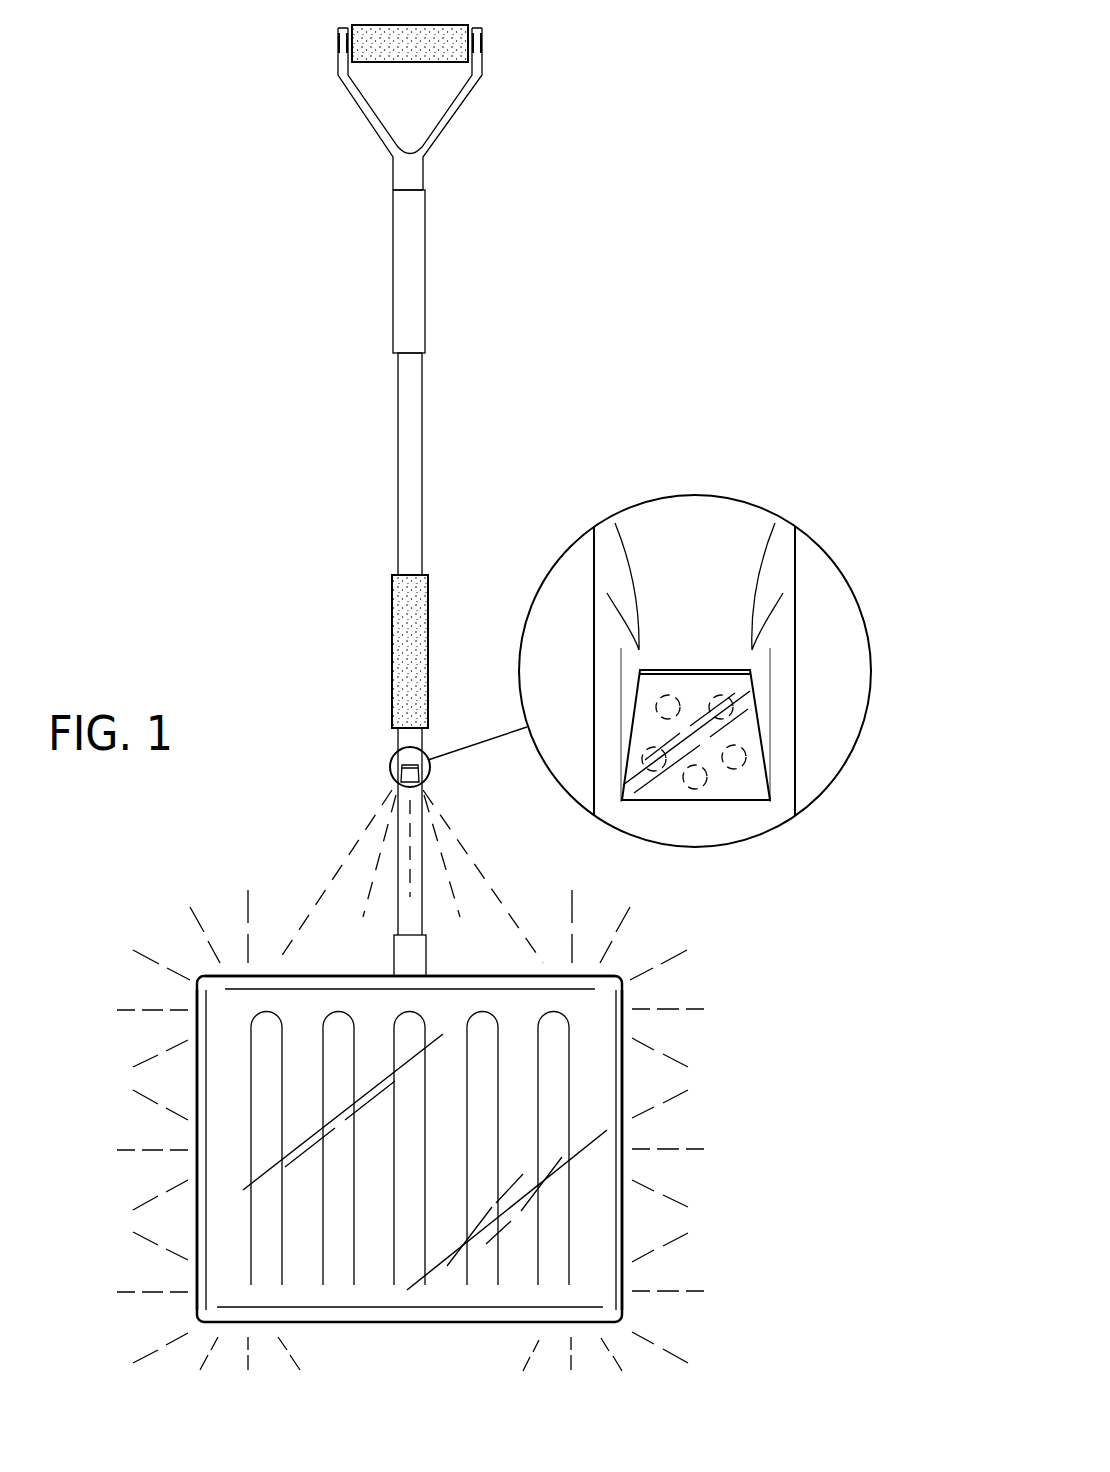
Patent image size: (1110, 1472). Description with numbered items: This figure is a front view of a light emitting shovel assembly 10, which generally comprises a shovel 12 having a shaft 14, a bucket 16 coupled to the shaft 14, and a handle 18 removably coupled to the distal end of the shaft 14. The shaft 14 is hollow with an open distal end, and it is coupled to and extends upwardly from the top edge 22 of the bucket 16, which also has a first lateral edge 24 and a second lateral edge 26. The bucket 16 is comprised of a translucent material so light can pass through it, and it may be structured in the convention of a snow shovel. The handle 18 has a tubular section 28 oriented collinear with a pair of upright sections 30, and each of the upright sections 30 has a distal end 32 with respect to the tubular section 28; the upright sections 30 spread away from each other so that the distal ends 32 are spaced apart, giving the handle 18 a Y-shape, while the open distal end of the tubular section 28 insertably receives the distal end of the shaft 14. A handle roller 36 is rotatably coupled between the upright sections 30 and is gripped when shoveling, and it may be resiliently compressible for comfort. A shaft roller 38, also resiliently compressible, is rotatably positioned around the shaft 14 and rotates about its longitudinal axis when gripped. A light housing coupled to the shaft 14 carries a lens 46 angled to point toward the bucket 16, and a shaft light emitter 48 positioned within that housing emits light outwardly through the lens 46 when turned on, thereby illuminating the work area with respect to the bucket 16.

The light emitting shovel assembly 10 is at (318, 383).
The shovel 12 is at (385, 493).
The shaft 14 is at (405, 443).
The bucket 16 is at (414, 1083).
The handle 18 is at (408, 95).
The top edge 22 is at (322, 976).
The first lateral edge 24 is at (198, 1162).
The second lateral edge 26 is at (620, 1077).
The tubular section 28 is at (430, 178).
The upright sections 30 is at (357, 113).
The distal end 32 is at (348, 27).
The handle roller 36 is at (403, 62).
The shaft roller 38 is at (420, 650).
The lens 46 is at (695, 657).
The shaft light emitter 48 is at (668, 697).